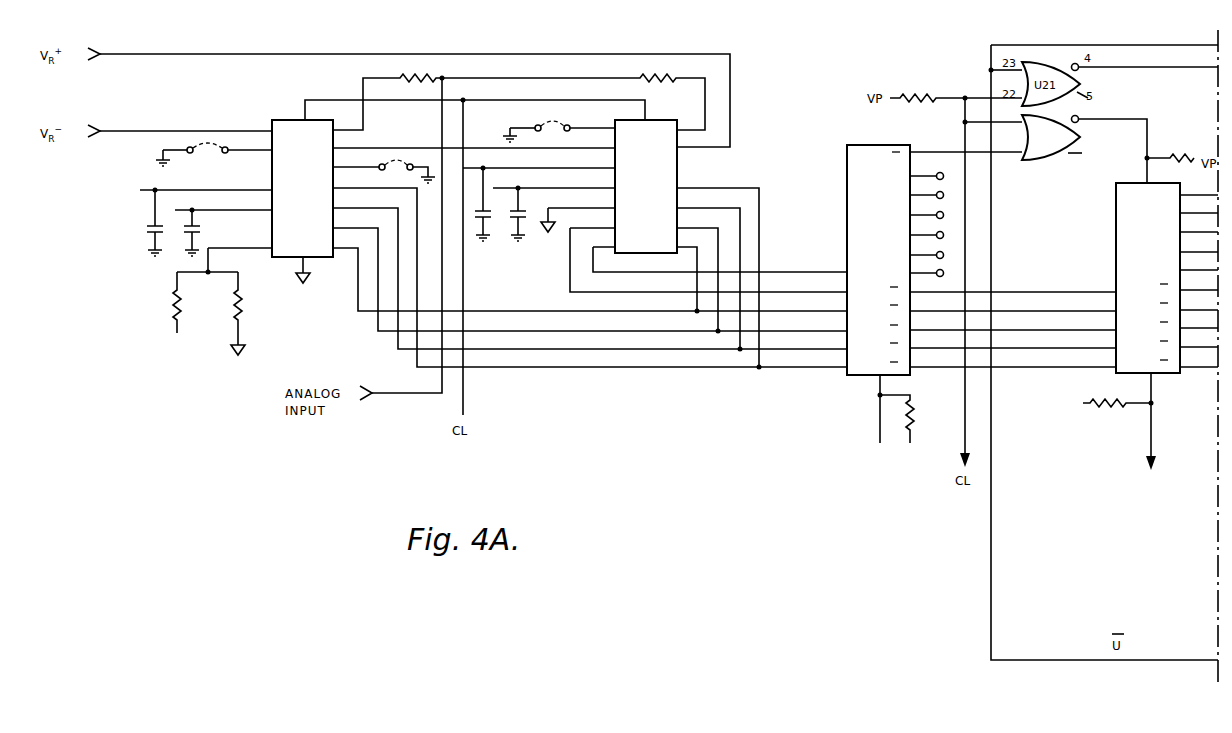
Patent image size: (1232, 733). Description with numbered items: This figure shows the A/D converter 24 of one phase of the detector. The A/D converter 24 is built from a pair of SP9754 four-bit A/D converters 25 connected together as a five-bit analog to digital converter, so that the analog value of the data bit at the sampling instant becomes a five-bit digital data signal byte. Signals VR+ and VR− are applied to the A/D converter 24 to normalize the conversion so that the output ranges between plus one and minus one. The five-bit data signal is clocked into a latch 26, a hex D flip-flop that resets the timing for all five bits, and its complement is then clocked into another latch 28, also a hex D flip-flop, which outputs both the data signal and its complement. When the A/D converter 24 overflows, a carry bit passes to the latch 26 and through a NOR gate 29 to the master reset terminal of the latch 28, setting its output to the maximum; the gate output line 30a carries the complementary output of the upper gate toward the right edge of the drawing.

The A/D converter 24 is at (643, 472).
The SP9754 4-bit A/D converter 25 is at (748, 82).
The latch 26 is at (847, 145).
The latch 28 is at (1116, 203).
The NOR gate 29 is at (1053, 160).
The gate output line 30a is at (1080, 72).